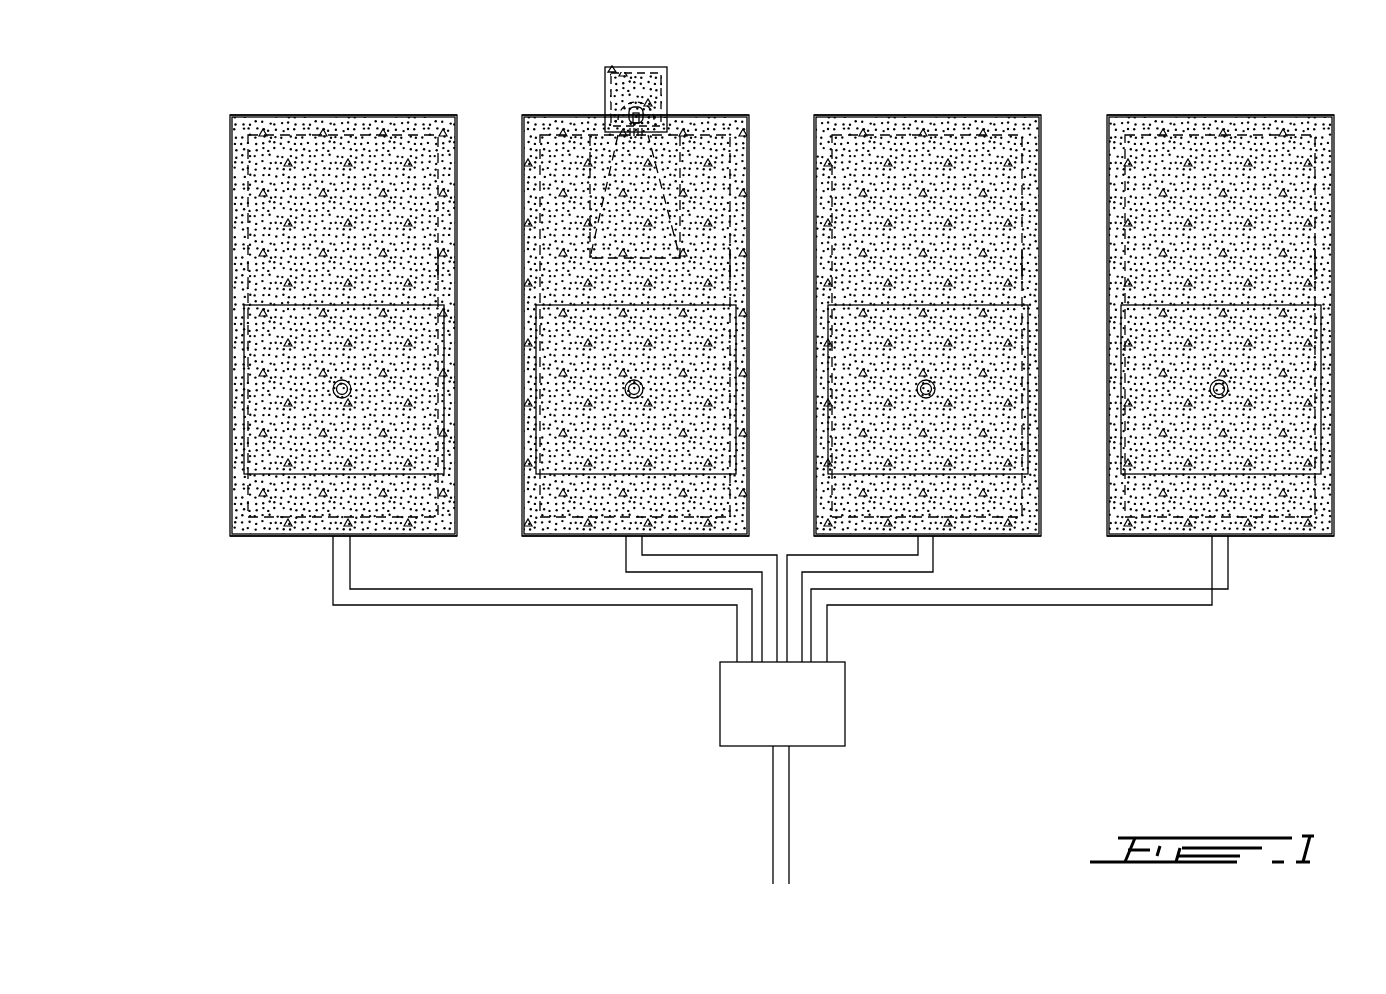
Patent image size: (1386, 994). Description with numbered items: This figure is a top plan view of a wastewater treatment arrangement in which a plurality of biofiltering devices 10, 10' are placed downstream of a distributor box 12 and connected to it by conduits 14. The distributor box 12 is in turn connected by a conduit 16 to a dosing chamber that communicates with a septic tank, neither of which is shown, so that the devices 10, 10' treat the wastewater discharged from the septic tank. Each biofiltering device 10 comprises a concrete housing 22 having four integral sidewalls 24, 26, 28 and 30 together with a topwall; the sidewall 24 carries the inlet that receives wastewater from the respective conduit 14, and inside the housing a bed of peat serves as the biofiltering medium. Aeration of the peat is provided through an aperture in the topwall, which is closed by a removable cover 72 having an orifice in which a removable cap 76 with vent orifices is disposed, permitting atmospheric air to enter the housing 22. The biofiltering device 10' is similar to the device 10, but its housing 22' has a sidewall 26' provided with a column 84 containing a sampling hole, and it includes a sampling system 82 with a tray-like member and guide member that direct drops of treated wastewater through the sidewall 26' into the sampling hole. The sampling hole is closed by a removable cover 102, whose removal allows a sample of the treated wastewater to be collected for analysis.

The biofiltering device 10 is at (784, 295).
The biofiltering device 10' is at (657, 286).
The distributor box 12 is at (812, 704).
The conduits 14 is at (515, 600).
The conduit 16 is at (780, 836).
The housing 22 is at (738, 325).
The housing 22' is at (606, 325).
The sidewall 24 is at (298, 537).
The sidewall 26 is at (778, 94).
The sidewall 26' is at (632, 94).
The sidewall 28 is at (237, 263).
The sidewall 30 is at (440, 262).
The removable cover 72 is at (278, 438).
The removable cap 76 is at (333, 389).
The sampling system 82 is at (698, 190).
The column 84 is at (610, 68).
The removable cover 102 is at (655, 67).